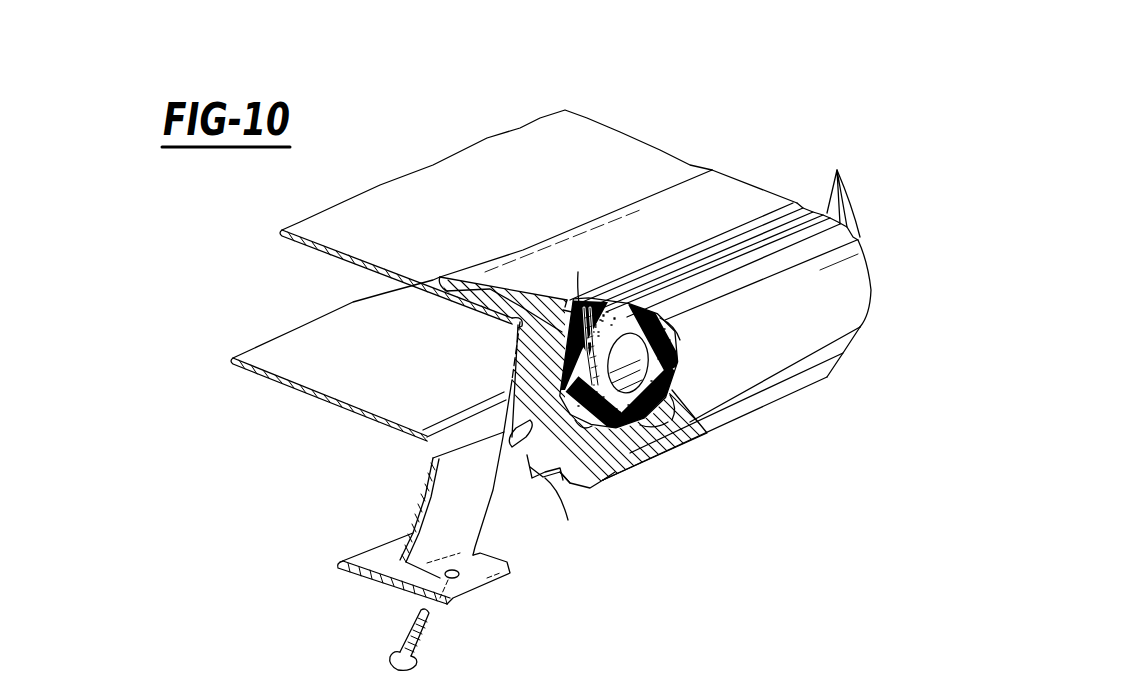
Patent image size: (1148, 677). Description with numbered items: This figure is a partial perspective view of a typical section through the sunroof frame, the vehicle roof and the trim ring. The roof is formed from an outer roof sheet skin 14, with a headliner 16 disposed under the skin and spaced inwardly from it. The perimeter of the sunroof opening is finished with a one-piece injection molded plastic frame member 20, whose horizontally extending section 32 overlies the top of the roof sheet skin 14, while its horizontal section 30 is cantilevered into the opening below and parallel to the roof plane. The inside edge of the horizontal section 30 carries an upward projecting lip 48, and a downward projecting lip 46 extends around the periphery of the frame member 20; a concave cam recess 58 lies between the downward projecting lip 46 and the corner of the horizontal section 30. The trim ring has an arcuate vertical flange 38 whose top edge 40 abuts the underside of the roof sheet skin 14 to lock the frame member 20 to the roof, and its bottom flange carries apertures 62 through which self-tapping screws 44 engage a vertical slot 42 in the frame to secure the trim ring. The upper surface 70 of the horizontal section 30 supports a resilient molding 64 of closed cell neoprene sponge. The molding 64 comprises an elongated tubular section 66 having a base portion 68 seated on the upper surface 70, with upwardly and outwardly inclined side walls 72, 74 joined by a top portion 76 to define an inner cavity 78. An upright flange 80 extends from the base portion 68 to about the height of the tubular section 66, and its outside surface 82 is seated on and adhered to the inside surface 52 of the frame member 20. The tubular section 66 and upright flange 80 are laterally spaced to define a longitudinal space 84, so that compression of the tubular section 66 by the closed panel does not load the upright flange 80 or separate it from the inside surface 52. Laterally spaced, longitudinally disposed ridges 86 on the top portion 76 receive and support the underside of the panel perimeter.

The roof sheet skin 14 is at (388, 200).
The headliner 16 is at (380, 370).
The frame member 20 is at (654, 330).
The horizontal section 30 is at (607, 467).
The horizontally extending section 32 is at (672, 239).
The vertical flange 38 is at (433, 442).
The top edge 40 is at (433, 458).
The vertical slot 42 is at (517, 464).
The self-tapping screws 44 is at (427, 638).
The downward projecting lip 46 is at (555, 498).
The upward projecting lip 48 is at (843, 352).
The inside surface 52 is at (563, 357).
The cam recess 58 is at (567, 480).
The apertures 62 is at (460, 577).
The resilient molding 64 is at (878, 232).
The tubular section 66 is at (777, 348).
The base portion 68 is at (637, 417).
The upper surface 70 is at (653, 420).
The side wall 72 is at (653, 393).
The side wall 74 is at (590, 405).
The top portion 76 is at (672, 333).
The inner cavity 78 is at (636, 369).
The upright flange 80 is at (570, 307).
The outside surface 82 is at (565, 380).
The longitudinal space 84 is at (580, 315).
The ridges 86 is at (840, 188).